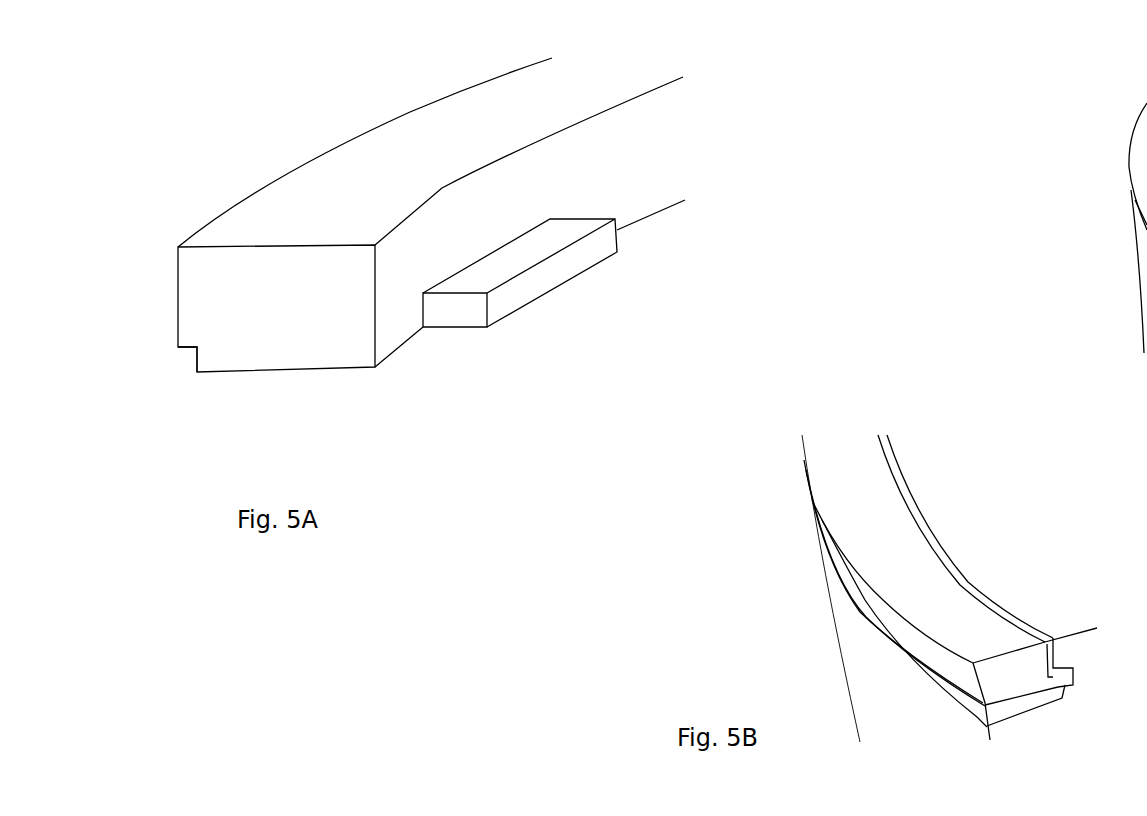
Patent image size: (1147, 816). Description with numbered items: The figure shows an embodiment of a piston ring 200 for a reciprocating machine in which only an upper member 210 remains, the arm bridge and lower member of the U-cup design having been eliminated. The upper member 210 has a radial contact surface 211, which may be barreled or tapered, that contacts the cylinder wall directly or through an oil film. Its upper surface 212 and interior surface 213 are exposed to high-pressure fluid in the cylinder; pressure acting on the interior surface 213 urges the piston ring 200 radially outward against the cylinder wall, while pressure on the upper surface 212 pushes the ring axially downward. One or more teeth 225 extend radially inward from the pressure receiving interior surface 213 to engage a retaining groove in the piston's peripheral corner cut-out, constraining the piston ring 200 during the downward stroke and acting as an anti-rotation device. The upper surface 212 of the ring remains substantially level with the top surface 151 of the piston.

In FIG. 5A, the piston ring 200 is at (366, 193).
In FIG. 5A, the upper member 210 is at (295, 312).
In FIG. 5A, the radial contact surface 211 is at (178, 318).
In FIG. 5A, the upper surface 212 is at (258, 215).
In FIG. 5B, the upper surface 212 is at (863, 542).
In FIG. 5A, the interior surface 213 is at (405, 270).
In FIG. 5A, the tooth 225 is at (540, 282).
In FIG. 5B, the top surface 151 is at (1019, 498).